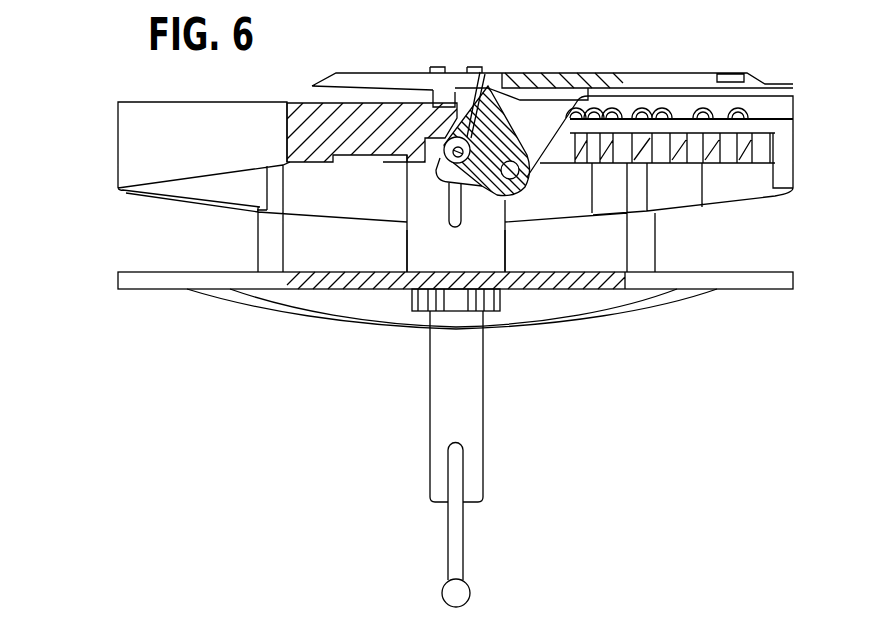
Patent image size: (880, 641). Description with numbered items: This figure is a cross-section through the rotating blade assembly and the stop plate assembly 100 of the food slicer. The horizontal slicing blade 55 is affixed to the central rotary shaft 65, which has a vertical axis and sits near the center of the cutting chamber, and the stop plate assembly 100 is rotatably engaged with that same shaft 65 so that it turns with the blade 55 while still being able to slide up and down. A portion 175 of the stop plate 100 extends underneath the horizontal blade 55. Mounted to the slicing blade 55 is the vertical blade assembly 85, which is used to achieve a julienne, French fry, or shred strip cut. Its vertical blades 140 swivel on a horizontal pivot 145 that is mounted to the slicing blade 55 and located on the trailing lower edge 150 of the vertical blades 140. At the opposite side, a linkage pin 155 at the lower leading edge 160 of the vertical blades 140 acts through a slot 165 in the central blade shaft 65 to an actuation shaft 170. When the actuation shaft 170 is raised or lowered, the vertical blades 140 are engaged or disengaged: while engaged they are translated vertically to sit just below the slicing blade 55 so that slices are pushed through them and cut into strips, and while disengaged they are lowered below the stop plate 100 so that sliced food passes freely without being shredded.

The stop plate assembly 100 is at (110, 142).
The portion of the stop plate 175 is at (297, 134).
The vertical blade assembly 85 is at (357, 95).
The vertical blades 140 is at (476, 96).
The horizontal pivot 145 is at (529, 174).
The slicing blade 55 is at (473, 146).
The linkage pin 155 is at (425, 181).
The lower leading edge 160 is at (399, 91).
The slot 165 is at (455, 229).
The trailing lower edge 150 is at (536, 188).
The rotary shaft 65 is at (517, 252).
The actuation shaft 170 is at (462, 592).